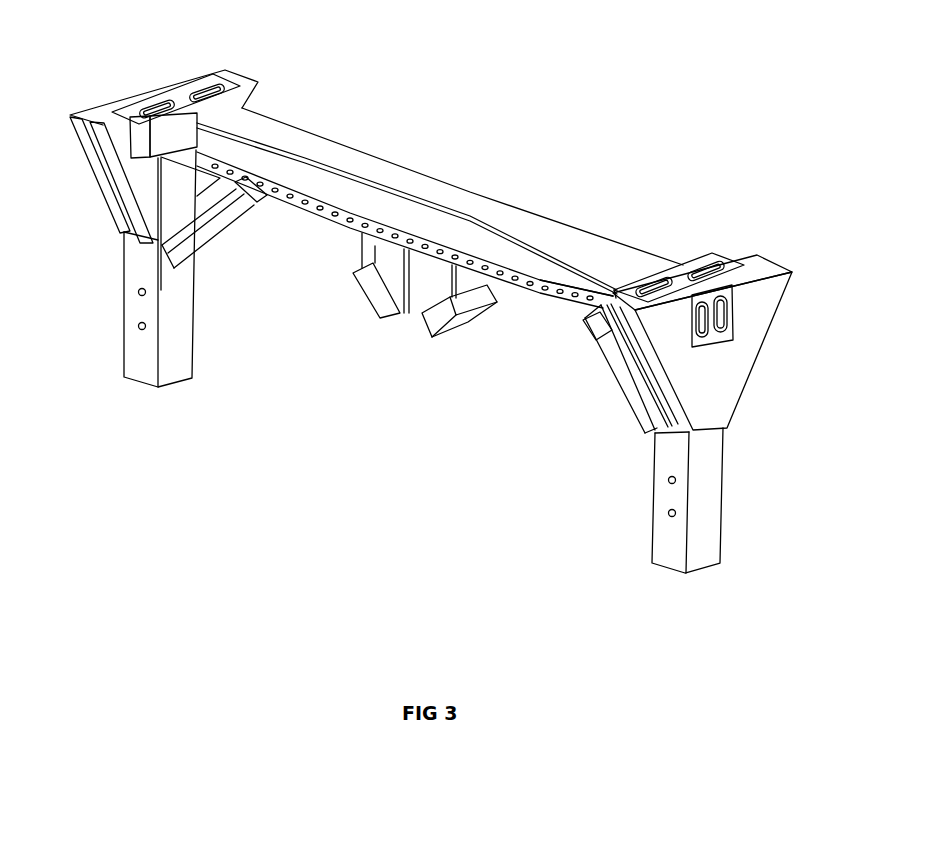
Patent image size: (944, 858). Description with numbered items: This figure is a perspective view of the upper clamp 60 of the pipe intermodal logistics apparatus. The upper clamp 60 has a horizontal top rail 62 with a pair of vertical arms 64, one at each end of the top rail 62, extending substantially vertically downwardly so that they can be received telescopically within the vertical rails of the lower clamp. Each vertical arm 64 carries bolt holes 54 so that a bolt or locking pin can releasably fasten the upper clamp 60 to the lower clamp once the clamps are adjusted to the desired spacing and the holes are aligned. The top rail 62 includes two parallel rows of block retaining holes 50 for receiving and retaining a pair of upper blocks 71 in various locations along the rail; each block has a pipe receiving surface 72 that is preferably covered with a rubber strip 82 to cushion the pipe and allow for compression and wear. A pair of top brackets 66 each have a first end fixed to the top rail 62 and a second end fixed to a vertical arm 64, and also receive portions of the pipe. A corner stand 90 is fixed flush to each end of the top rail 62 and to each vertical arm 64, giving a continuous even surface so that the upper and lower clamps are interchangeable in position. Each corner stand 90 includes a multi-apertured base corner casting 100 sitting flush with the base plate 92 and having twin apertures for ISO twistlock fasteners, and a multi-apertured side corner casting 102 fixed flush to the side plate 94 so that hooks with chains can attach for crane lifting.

The block retaining holes 50 is at (552, 290).
The bolt holes 54 is at (660, 474).
The upper clamp 60 is at (377, 430).
The horizontal top rail 62 is at (422, 186).
The vertical arms 64 is at (708, 526).
The top brackets 66 is at (196, 262).
The upper blocks 71 is at (415, 313).
The pipe receiving surface 72 is at (372, 267).
The rubber strip 82 is at (251, 228).
The corner stand 90 is at (173, 68).
The base plate 92 is at (98, 104).
The side plate 94 is at (86, 163).
The base corner casting 100 is at (695, 261).
The side corner casting 102 is at (703, 345).